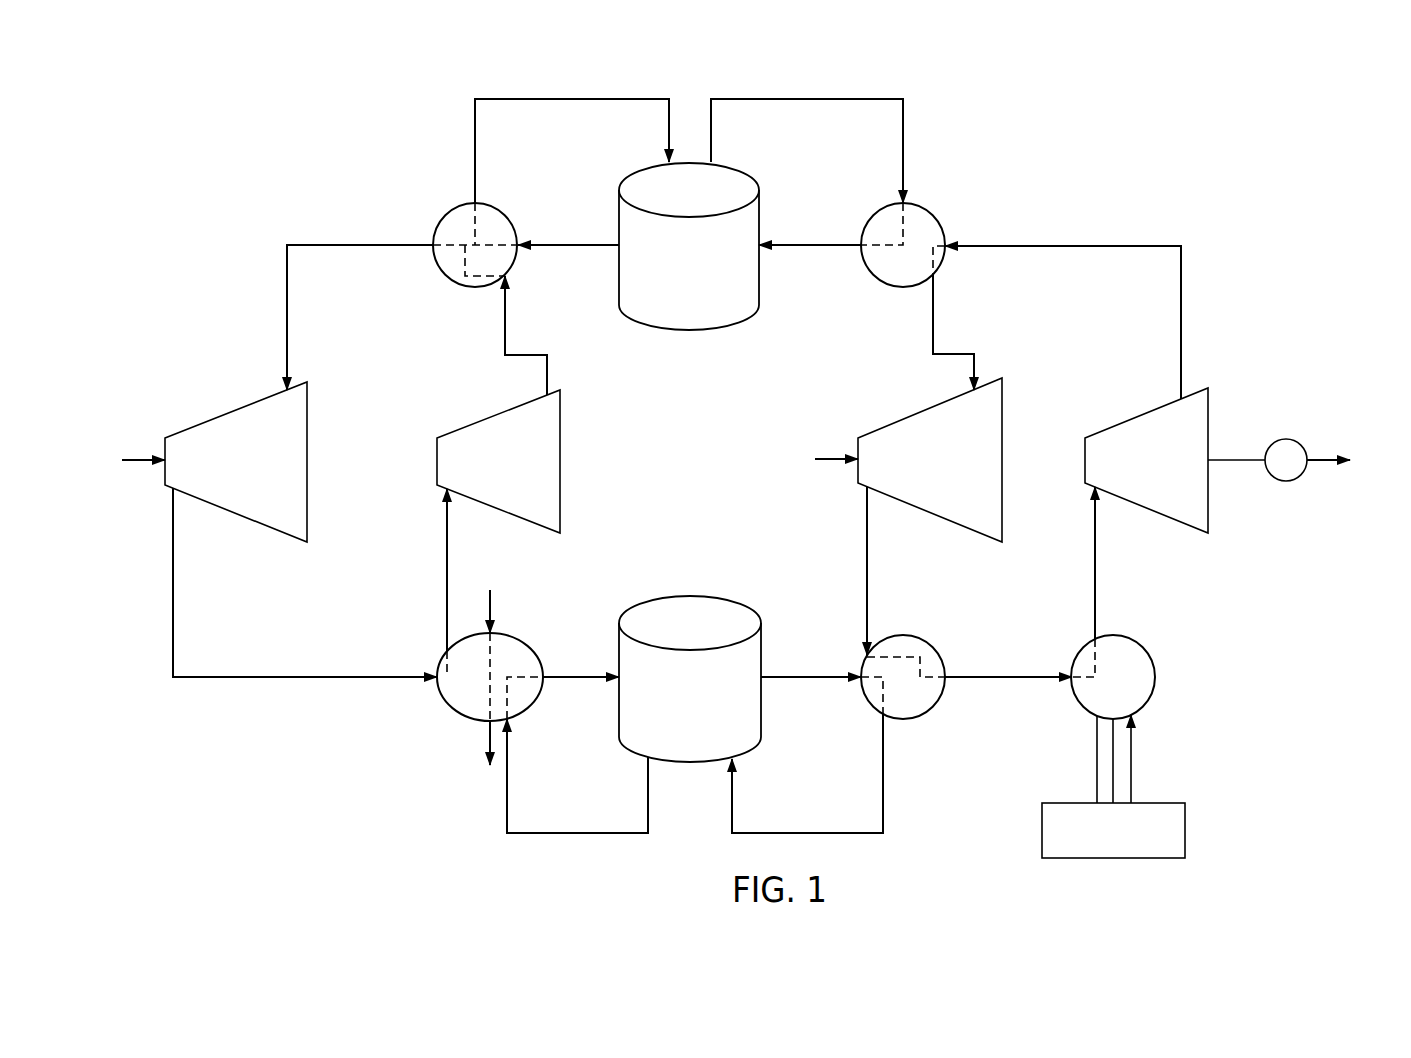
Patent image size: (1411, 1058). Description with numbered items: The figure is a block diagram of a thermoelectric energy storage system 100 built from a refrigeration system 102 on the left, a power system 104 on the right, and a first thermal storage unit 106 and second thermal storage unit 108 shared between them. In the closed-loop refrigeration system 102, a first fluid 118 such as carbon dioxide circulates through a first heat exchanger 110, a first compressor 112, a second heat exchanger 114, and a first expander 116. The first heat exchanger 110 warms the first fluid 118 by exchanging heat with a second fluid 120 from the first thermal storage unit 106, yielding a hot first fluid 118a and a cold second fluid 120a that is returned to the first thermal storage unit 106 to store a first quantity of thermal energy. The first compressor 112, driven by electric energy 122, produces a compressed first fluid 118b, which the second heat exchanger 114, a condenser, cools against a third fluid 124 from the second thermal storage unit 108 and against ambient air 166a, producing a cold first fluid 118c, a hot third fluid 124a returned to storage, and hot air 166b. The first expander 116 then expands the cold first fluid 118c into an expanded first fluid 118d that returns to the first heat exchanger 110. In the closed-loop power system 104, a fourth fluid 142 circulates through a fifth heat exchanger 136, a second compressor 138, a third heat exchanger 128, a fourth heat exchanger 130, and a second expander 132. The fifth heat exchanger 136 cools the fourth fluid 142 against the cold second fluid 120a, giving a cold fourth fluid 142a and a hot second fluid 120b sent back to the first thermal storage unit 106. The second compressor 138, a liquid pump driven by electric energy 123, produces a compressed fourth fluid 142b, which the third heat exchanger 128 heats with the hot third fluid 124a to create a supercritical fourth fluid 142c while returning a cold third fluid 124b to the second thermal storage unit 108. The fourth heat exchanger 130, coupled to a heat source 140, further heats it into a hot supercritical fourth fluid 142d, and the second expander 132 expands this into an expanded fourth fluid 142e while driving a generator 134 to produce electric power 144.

The thermoelectric energy storage system 100 is at (1296, 114).
The refrigeration system 102 is at (306, 194).
The power system 104 is at (1142, 190).
The first thermal storage unit 106 is at (617, 285).
The second thermal storage unit 108 is at (690, 596).
The first heat exchanger 110 is at (443, 218).
The first compressor 112 is at (310, 400).
The second heat exchanger 114 is at (437, 695).
The first expander 116 is at (562, 420).
The first fluid 118 is at (360, 461).
The hot first fluid 118a is at (282, 388).
The compressed first fluid 118b is at (430, 672).
The cold first fluid 118c is at (443, 493).
The expanded first fluid 118d is at (502, 284).
The second fluid 120 is at (736, 172).
The cold second fluid 120a is at (663, 158).
The hot second fluid 120b is at (765, 237).
The electric energy 122 is at (160, 455).
The electric energy 123 is at (852, 455).
The third fluid 124 is at (512, 725).
The hot third fluid 124a is at (607, 672).
The cold third fluid 124b is at (738, 767).
The third heat exchanger 128 is at (930, 717).
The fourth heat exchanger 130 is at (1157, 677).
The second expander 132 is at (1145, 405).
The generator 134 is at (1284, 438).
The fifth heat exchanger 136 is at (863, 268).
The second compressor 138 is at (970, 531).
The heat source 140 is at (1187, 833).
The fourth fluid 142 is at (1024, 441).
The cold fourth fluid 142a is at (970, 385).
The compressed fourth fluid 142b is at (868, 650).
The supercritical fourth fluid 142c is at (1068, 672).
The hot supercritical fourth fluid 142d is at (1090, 492).
The expanded fourth fluid 142e is at (948, 244).
The electric power 144 is at (1330, 465).
The ambient air 166a is at (495, 628).
The hot air 166b is at (482, 760).